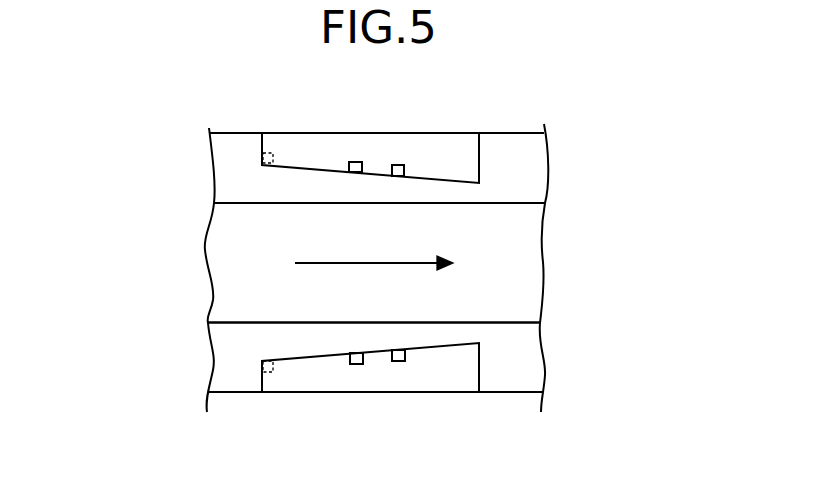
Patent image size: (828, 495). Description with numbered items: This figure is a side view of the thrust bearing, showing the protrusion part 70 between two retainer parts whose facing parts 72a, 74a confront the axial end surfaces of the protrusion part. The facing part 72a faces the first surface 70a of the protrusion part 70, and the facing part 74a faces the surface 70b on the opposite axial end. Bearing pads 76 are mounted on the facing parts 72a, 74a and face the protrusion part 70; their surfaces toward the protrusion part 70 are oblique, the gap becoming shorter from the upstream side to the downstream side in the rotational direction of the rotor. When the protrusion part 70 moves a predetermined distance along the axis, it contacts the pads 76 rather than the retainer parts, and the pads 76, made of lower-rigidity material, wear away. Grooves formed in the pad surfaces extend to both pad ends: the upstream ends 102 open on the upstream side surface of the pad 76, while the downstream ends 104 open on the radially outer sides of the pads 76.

The protrusion part 70 is at (517, 253).
The first surface of the protrusion part 70a is at (510, 323).
The first surface of the protrusion part 70b is at (509, 203).
The facing part 72a is at (442, 178).
The facing part 74a is at (443, 348).
The bearing pad 76 is at (275, 142).
The upstream-side end of the groove 102 is at (262, 162).
The downstream-side end of the groove 104 is at (359, 160).